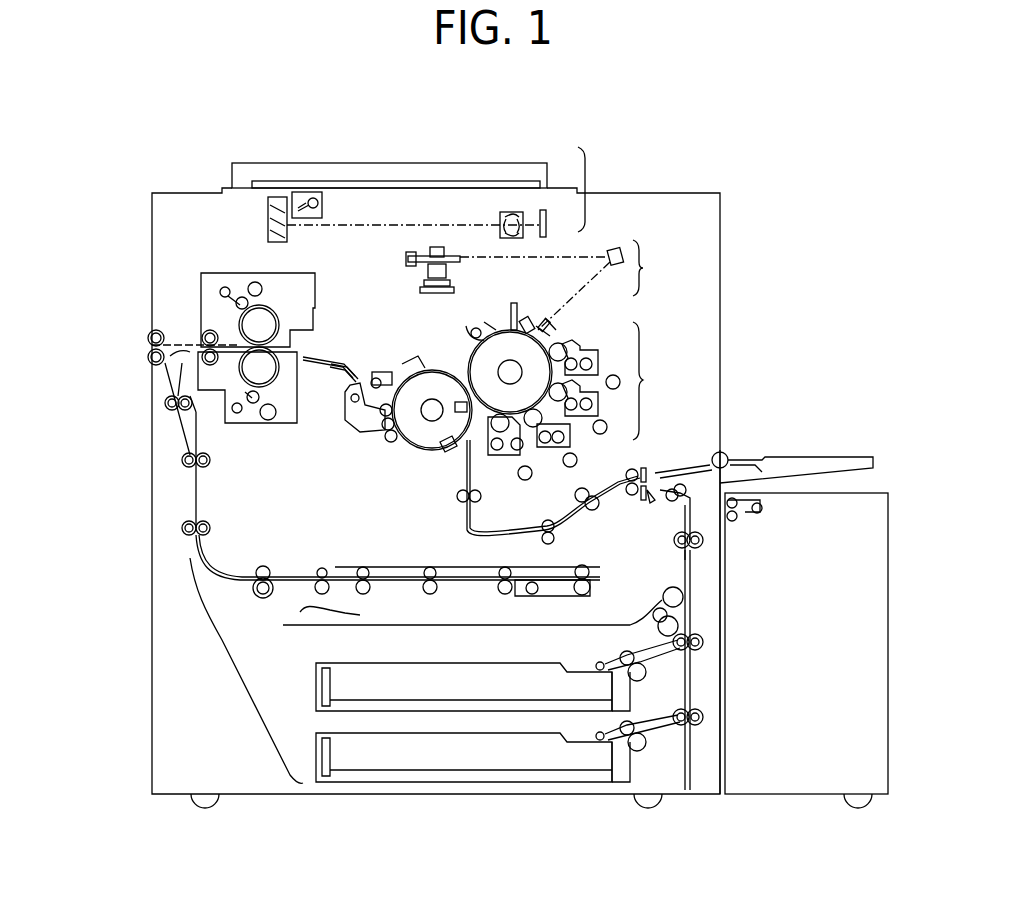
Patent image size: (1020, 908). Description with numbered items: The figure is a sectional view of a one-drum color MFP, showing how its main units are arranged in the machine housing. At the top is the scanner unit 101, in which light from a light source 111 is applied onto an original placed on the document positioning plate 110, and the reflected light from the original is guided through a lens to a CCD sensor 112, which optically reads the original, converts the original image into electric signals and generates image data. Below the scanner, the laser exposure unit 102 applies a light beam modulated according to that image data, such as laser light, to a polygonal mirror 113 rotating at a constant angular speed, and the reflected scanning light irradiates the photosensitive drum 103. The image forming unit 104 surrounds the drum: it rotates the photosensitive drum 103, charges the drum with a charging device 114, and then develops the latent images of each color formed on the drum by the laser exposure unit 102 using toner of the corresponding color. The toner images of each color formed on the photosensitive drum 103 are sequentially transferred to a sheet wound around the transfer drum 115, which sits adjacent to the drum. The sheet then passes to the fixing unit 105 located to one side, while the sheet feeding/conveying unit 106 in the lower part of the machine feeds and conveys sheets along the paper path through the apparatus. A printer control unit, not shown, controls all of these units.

The scanner unit 101 is at (594, 191).
The laser exposure unit 102 is at (654, 268).
The photosensitive drum 103 is at (470, 363).
The image forming unit 104 is at (594, 401).
The fixing unit 105 is at (210, 297).
The sheet feeding/conveying unit 106 is at (240, 680).
The document positioning plate 110 is at (395, 187).
The light source 111 is at (321, 203).
The CCD sensor 112 is at (547, 224).
The polygonal mirror 113 is at (407, 258).
The charging device 114 is at (525, 320).
The transfer drum 115 is at (432, 450).